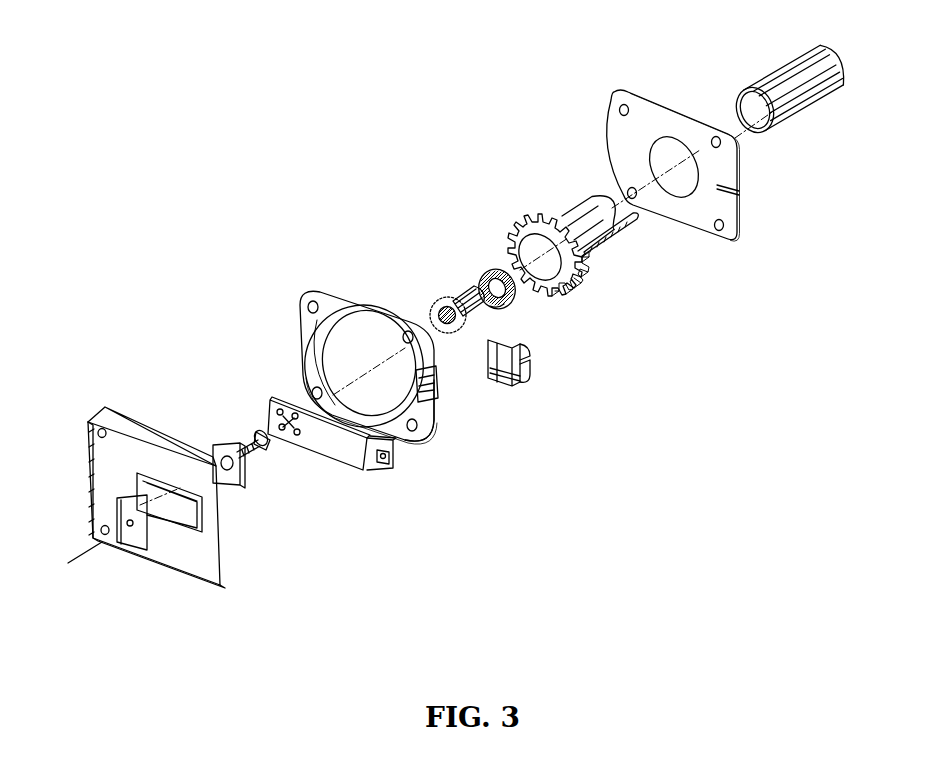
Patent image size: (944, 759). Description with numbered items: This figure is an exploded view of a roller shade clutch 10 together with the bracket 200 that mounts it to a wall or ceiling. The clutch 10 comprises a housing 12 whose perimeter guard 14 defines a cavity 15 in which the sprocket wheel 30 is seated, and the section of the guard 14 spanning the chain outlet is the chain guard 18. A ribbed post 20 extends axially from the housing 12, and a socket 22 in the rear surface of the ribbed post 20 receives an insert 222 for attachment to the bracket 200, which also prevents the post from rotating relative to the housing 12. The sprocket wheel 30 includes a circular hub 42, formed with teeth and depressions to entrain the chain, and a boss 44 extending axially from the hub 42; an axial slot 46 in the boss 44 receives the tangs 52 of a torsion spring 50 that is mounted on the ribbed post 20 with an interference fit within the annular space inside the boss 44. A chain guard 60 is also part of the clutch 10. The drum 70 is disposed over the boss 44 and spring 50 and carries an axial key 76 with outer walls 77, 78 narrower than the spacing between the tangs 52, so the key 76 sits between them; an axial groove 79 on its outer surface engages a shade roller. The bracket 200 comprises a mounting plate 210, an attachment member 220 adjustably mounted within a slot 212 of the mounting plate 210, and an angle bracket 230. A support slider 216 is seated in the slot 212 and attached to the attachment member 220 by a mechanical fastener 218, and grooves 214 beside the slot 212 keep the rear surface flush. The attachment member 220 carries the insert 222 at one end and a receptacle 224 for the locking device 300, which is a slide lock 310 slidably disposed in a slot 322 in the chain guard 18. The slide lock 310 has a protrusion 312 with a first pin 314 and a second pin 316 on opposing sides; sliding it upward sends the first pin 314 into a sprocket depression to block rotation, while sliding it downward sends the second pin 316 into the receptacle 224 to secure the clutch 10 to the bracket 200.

The roller shade clutch 10 is at (283, 253).
The housing 12 is at (305, 308).
The guard 14 is at (430, 417).
The cavity 15 is at (320, 342).
The chain guard 18 is at (437, 388).
The ribbed post 20 is at (455, 296).
The socket 22 is at (445, 314).
The sprocket wheel 30 is at (578, 292).
The circular hub 42 is at (521, 226).
The boss 44 is at (573, 214).
The axial slot 46 is at (600, 232).
The torsion spring 50 is at (490, 272).
The tangs 52 is at (514, 300).
The chain guard 60 is at (708, 230).
The drum 70 is at (790, 66).
The axial key 76 is at (772, 126).
The outer wall 77 is at (755, 92).
The outer wall 78 is at (768, 138).
The axial groove 79 is at (800, 98).
The bracket 200 is at (100, 352).
The mounting plate 210 is at (160, 540).
The slot 212 is at (140, 492).
The grooves 214 is at (157, 483).
The support slider 216 is at (122, 514).
The mechanical fastener 218 is at (248, 456).
The attachment member 220 is at (336, 455).
The insert 222 is at (212, 453).
The receptacle 224 is at (392, 456).
The angle bracket 230 is at (104, 410).
The locking device 300 is at (518, 396).
The slide lock 310 is at (550, 373).
The protrusion 312 is at (528, 373).
The first pin 314 is at (528, 359).
The second pin 316 is at (528, 387).
The slot 322 is at (428, 372).